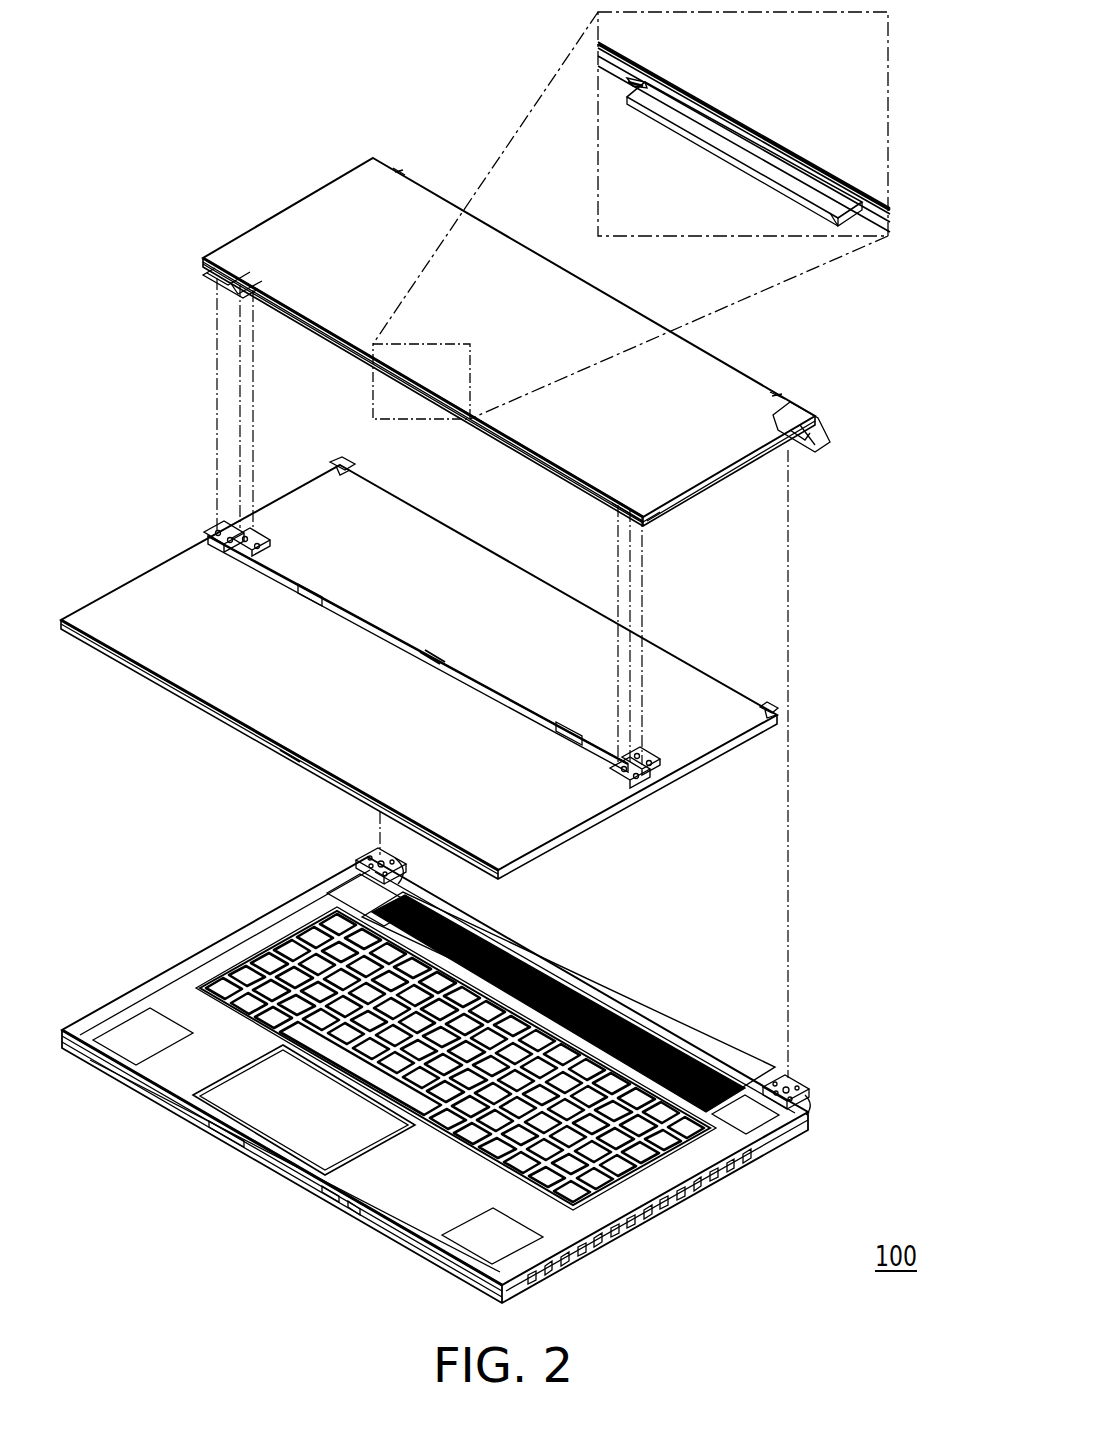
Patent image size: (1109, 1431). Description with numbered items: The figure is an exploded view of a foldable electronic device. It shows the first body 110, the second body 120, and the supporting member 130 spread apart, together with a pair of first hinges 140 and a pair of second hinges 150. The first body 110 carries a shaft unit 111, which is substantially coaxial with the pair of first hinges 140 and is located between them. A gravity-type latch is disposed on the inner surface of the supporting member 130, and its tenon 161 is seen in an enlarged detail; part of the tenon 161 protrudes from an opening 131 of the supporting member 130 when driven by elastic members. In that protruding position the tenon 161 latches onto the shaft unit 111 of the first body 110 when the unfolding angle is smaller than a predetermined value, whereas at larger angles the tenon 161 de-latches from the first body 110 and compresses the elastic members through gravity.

The first body 110 is at (610, 812).
The shaft unit 111 is at (410, 663).
The second body 120 is at (325, 1197).
The supporting member 130 is at (300, 228).
The opening 131 is at (625, 82).
The first hinge 140 is at (240, 530).
The second hinge 150 is at (365, 852).
The tenon 161 is at (723, 135).